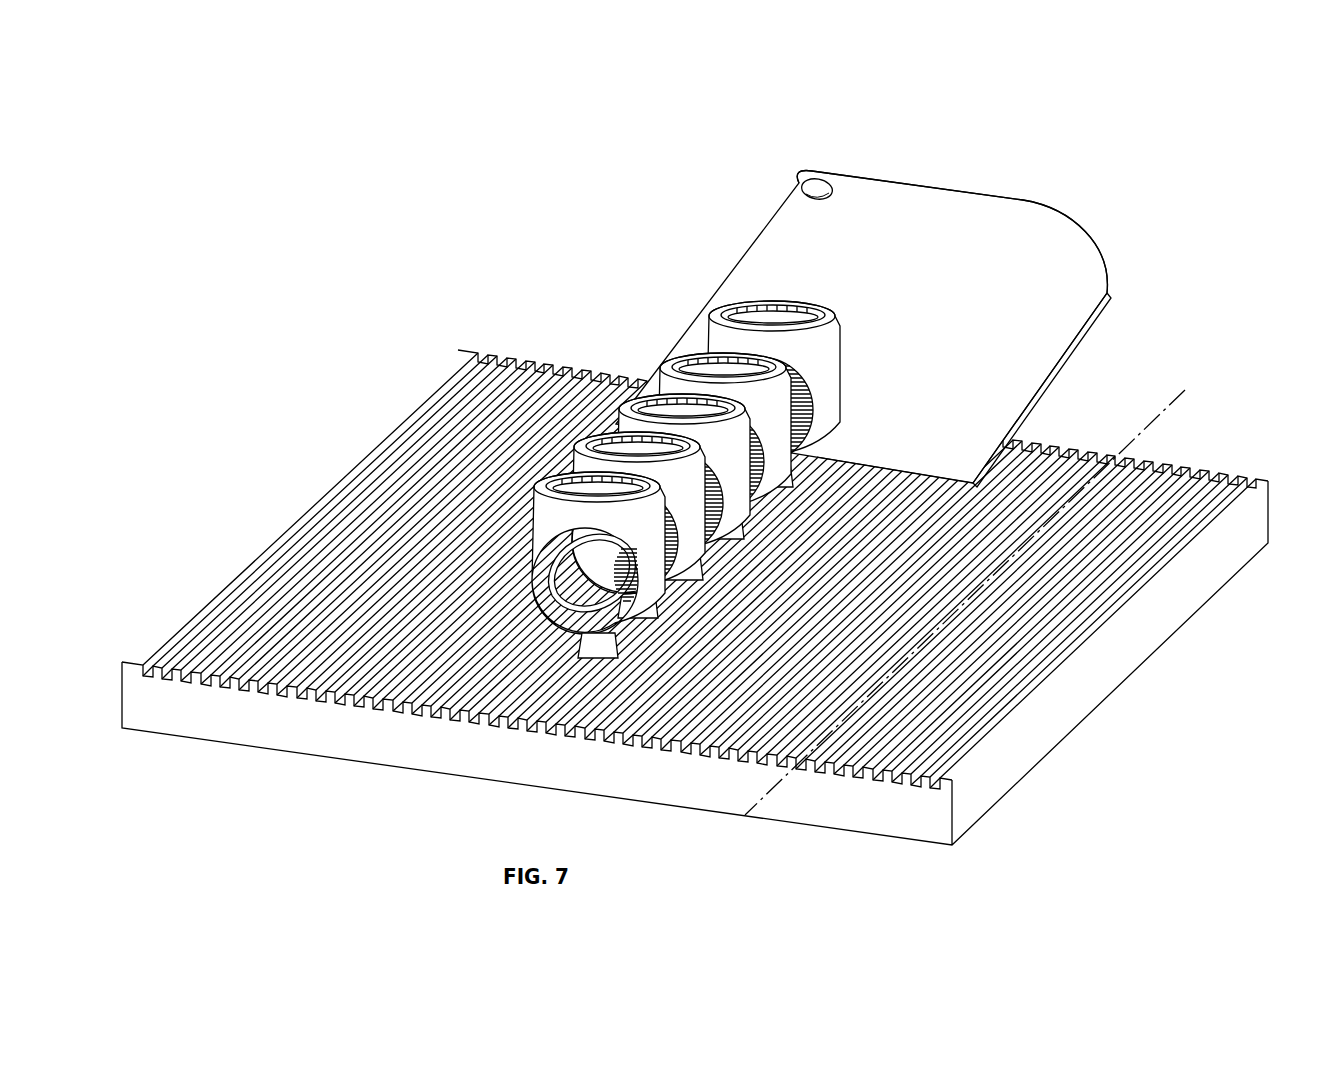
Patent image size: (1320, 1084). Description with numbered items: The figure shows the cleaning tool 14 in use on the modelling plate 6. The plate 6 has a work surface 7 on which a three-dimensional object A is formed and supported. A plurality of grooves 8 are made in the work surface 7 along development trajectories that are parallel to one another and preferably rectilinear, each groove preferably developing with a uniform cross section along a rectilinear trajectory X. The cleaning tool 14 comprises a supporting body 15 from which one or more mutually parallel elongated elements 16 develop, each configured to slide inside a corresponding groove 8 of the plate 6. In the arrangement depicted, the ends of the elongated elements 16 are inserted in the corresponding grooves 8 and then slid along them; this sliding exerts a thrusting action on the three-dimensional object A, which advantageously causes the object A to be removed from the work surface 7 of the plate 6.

The modelling plate 6 is at (305, 383).
The work surface 7 is at (450, 433).
The grooves 8 is at (1225, 450).
The cleaning tool 14 is at (1136, 242).
The supporting body 15 is at (1012, 228).
The elongated elements 16 is at (945, 469).
The three-dimensional object A is at (717, 333).
The rectilinear trajectory X is at (965, 596).